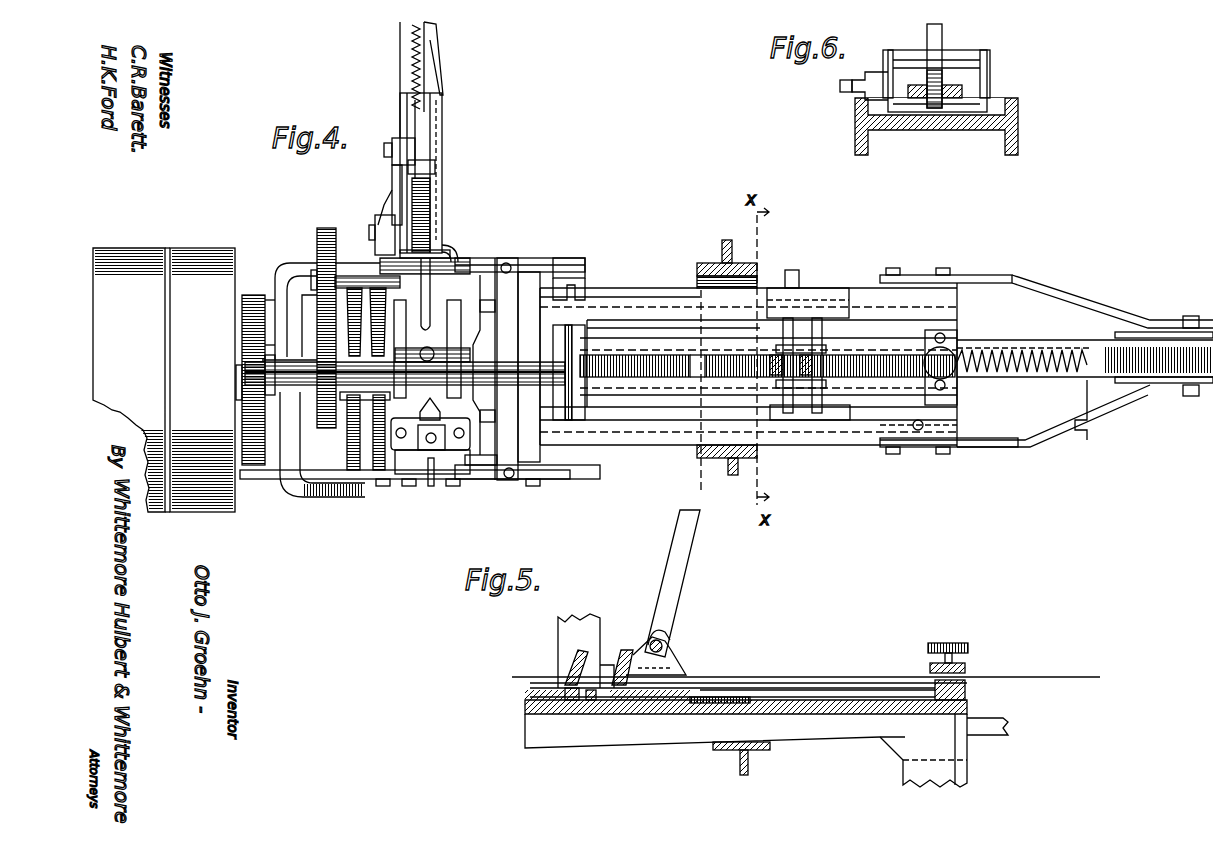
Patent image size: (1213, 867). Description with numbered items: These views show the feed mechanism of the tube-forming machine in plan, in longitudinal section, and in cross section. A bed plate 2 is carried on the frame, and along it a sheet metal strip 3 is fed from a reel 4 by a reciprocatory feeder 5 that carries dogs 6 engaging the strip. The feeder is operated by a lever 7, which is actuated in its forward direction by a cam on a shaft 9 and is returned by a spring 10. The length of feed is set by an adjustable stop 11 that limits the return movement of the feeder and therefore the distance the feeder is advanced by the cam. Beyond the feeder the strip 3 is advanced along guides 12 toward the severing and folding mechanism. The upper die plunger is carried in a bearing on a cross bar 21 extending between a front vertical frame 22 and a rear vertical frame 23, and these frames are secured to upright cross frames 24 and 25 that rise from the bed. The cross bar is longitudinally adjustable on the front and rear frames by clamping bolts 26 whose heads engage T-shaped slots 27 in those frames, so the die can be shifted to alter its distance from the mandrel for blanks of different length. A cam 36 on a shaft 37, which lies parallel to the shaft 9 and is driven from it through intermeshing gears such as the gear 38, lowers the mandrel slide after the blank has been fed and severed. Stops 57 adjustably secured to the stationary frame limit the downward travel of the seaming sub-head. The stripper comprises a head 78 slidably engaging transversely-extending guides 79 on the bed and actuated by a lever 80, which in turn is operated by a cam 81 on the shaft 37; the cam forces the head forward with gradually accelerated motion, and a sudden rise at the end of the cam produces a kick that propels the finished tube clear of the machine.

In FIG. 6, the bed plate 2 is at (1018, 138).
In FIG. 5, the bed plate 2 is at (648, 745).
In FIG. 4, the sheet metal strip 3 is at (1043, 340).
In FIG. 4, the reel 4 is at (1172, 372).
In FIG. 4, the reciprocatory feeder 5 is at (835, 322).
In FIG. 4, the dogs 6 is at (773, 372).
In FIG. 6, the dogs 6 is at (937, 85).
In FIG. 5, the dogs 6 is at (623, 650).
In FIG. 4, the lever 7 is at (806, 402).
In FIG. 6, the lever 7 is at (927, 33).
In FIG. 5, the lever 7 is at (690, 576).
In FIG. 4, the shaft 9 is at (560, 372).
In FIG. 4, the spring 10 is at (990, 362).
In FIG. 5, the spring 10 is at (725, 700).
In FIG. 4, the adjustable stop 11 is at (918, 432).
In FIG. 5, the adjustable stop 11 is at (945, 745).
In FIG. 4, the guides 12 is at (640, 355).
In FIG. 6, the guides 12 is at (965, 90).
In FIG. 4, the cross bar 21 is at (512, 285).
In FIG. 4, the front vertical frame 22 is at (563, 480).
In FIG. 4, the rear vertical frame 23 is at (522, 258).
In FIG. 4, the upright cross frame 24 is at (582, 293).
In FIG. 4, the upright cross frame 25 is at (350, 440).
In FIG. 4, the clamping bolts 26 is at (500, 262).
In FIG. 4, the T-shaped slots 27 is at (476, 482).
In FIG. 4, the cam 36 is at (442, 250).
In FIG. 4, the shaft 37 is at (317, 250).
In FIG. 4, the gear 38 is at (322, 352).
In FIG. 4, the stops 57 is at (406, 466).
In FIG. 4, the stripper head 78 is at (445, 175).
In FIG. 4, the transversely-extending guides 79 is at (440, 192).
In FIG. 4, the lever 80 is at (402, 204).
In FIG. 4, the cam 81 is at (380, 262).